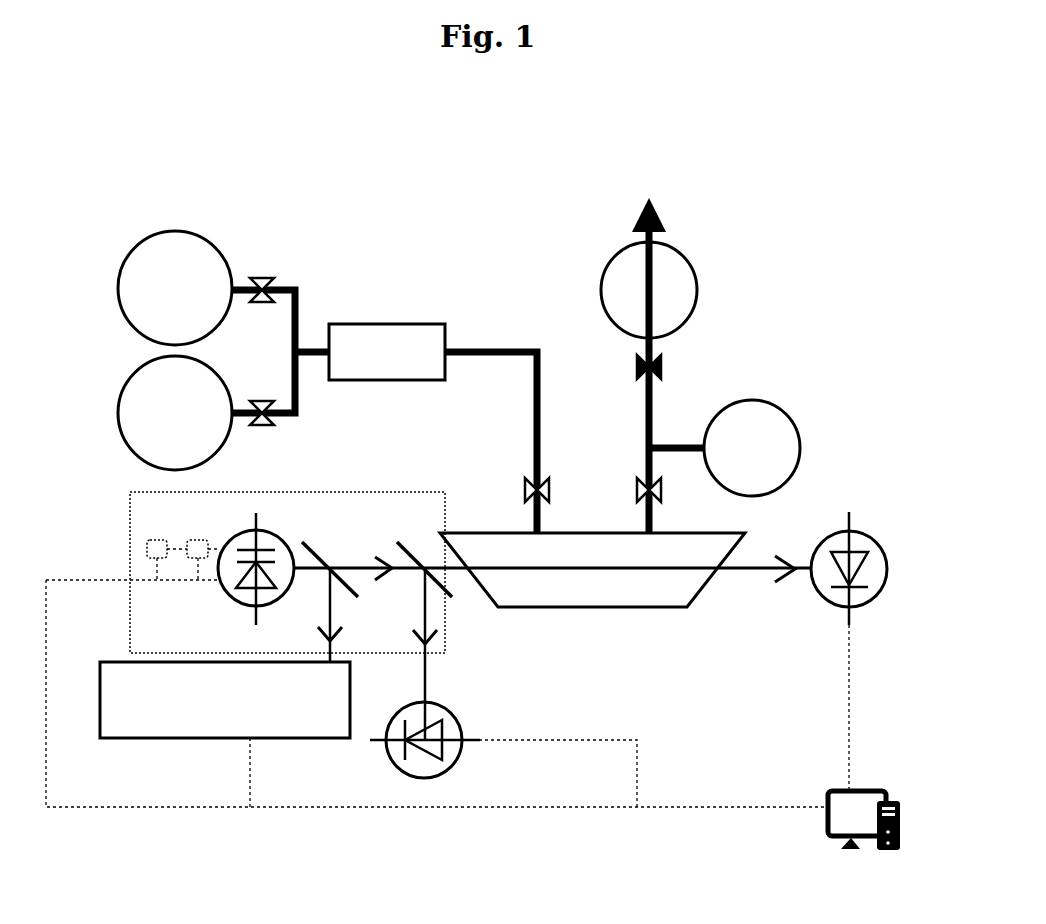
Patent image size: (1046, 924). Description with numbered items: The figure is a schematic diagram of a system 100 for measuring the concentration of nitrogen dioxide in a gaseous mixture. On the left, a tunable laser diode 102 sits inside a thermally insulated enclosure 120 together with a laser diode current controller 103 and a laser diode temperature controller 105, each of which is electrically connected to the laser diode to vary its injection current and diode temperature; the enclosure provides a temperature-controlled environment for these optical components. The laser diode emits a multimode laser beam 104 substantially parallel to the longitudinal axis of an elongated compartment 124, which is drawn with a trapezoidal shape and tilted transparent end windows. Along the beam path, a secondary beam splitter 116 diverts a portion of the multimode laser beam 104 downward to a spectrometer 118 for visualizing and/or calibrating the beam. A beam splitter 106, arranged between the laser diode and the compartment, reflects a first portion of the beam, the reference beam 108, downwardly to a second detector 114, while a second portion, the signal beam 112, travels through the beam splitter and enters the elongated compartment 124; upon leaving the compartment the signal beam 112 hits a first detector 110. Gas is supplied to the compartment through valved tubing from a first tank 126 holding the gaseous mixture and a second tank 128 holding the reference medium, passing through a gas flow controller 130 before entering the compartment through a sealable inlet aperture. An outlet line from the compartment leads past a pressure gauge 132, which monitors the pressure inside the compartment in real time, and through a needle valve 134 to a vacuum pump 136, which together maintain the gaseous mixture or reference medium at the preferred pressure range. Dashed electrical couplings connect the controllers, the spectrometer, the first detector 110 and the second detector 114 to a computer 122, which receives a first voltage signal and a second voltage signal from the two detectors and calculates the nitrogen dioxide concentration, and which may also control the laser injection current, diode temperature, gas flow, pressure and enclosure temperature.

The system 100 is at (158, 128).
The tunable laser diode 102 is at (218, 597).
The laser diode current controller 103 is at (156, 539).
The multimode laser beam 104 is at (360, 563).
The laser diode temperature controller 105 is at (198, 539).
The beam splitter 106 is at (410, 528).
The reference beam 108 is at (427, 680).
The first detector 110 is at (890, 570).
The signal beam 112 is at (742, 573).
The second detector 114 is at (462, 760).
The secondary beam splitter 116 is at (324, 545).
The spectrometer 118 is at (288, 739).
The thermally insulated enclosure 120 is at (125, 504).
The computer 122 is at (902, 820).
The elongated compartment 124 is at (584, 608).
The tank 126 is at (118, 276).
The tank 128 is at (118, 402).
The gas flow controller 130 is at (395, 322).
The pressure gauge 132 is at (803, 447).
The needle valve 134 is at (666, 372).
The vacuum pump 136 is at (699, 284).